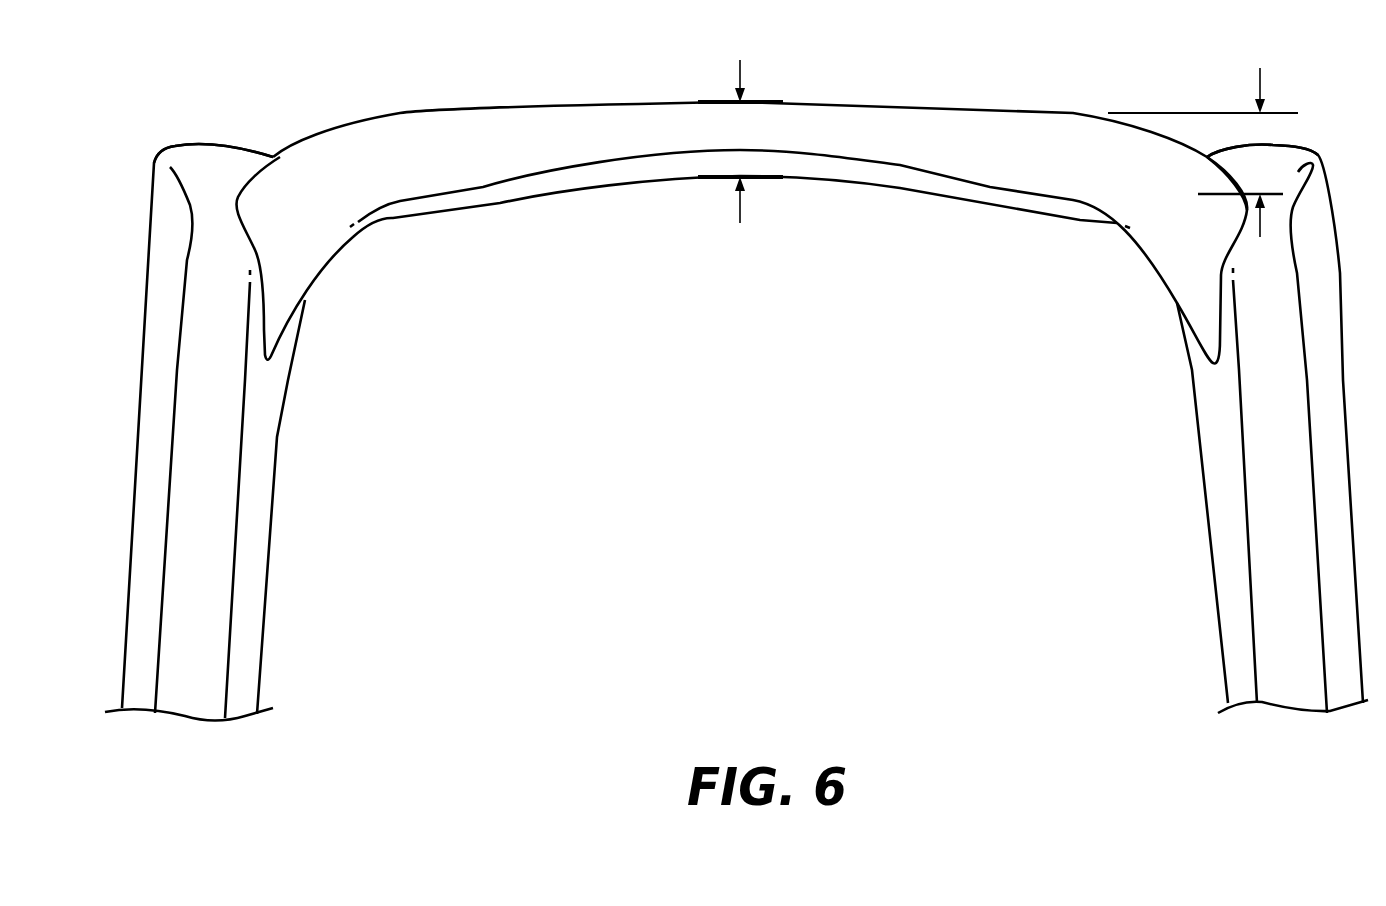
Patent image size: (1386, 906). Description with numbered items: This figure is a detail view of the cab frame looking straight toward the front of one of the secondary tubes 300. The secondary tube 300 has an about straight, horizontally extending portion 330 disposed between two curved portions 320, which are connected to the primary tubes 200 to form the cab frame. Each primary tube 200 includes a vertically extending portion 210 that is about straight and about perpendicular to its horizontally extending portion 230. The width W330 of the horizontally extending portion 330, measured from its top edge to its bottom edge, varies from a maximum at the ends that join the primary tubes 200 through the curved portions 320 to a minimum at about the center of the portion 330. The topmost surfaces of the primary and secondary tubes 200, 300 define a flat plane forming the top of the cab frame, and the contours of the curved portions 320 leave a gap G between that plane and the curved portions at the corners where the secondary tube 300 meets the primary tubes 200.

The primary tube 200 is at (237, 617).
The vertically extending portion 210 is at (190, 502).
The horizontally extending portion 230 is at (190, 157).
The secondary tube 300 is at (940, 125).
The curved portion 320 is at (287, 183).
The horizontally extending portion 330 is at (603, 115).
The width W330 is at (781, 71).
The gap G is at (1203, 151).